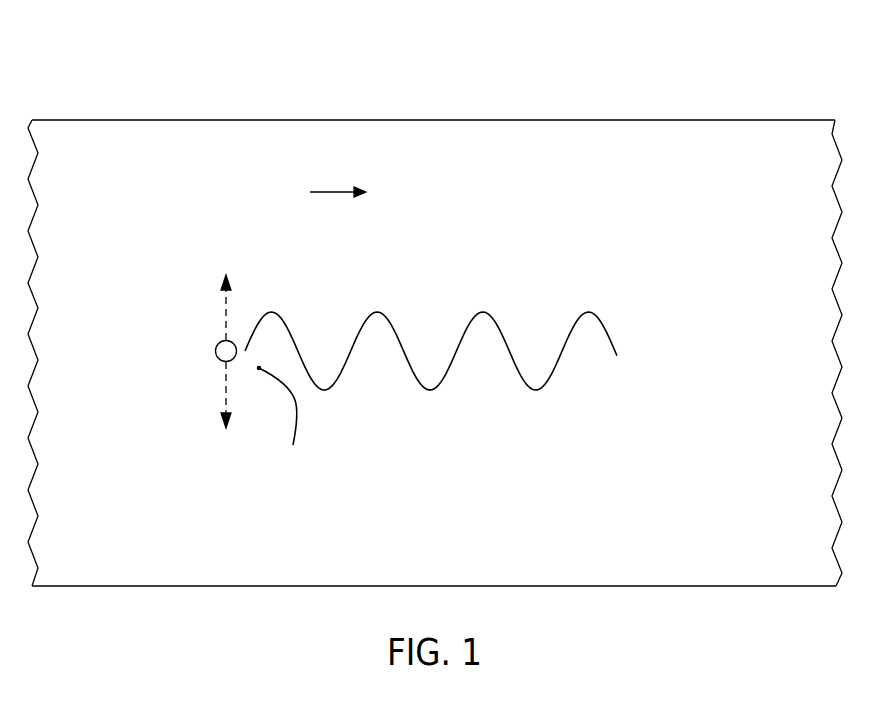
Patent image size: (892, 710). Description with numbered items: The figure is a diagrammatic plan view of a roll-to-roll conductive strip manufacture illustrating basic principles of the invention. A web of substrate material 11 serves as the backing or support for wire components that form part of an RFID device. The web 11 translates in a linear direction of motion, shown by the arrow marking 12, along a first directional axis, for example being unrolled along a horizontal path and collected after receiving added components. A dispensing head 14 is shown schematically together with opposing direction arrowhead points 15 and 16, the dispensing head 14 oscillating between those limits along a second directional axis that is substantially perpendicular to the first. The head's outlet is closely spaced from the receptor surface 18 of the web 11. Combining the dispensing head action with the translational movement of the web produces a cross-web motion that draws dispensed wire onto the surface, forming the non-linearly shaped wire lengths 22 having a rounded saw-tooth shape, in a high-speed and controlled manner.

The web of substrate material 11 is at (163, 118).
The arrow marking 12 is at (327, 191).
The dispensing head 14 is at (214, 351).
The arrowhead point 15 is at (223, 290).
The arrowhead point 16 is at (223, 418).
The receptor surface 18 is at (607, 207).
The non-linearly shaped wire lengths 22 is at (612, 336).